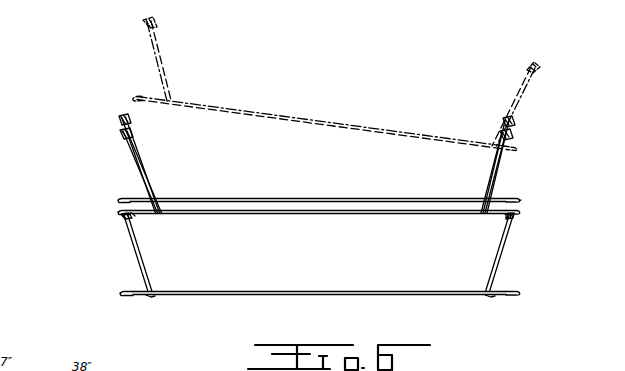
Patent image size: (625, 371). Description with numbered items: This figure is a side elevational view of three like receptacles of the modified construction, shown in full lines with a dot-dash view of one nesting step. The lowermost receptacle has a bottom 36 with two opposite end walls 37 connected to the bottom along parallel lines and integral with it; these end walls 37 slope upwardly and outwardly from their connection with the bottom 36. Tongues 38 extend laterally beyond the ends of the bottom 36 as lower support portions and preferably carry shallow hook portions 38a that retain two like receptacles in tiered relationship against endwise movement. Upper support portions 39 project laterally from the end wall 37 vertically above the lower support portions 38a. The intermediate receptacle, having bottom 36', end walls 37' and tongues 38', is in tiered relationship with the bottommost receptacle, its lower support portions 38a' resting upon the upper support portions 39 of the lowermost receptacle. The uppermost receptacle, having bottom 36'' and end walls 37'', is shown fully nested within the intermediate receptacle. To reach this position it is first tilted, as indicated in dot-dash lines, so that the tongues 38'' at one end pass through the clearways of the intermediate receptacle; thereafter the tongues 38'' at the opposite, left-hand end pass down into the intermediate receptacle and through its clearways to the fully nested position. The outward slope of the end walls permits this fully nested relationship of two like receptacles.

The bottom 36 is at (320, 282).
The bottom of intermediate receptacle 36' is at (319, 225).
The bottom of uppermost receptacle 36'' is at (319, 148).
The end wall 37 is at (318, 253).
The end wall of intermediate receptacle 37' is at (327, 170).
The end wall of uppermost receptacle 37'' is at (339, 115).
The tongue 38 is at (322, 309).
The tongue of intermediate receptacle 38' is at (320, 228).
The tongue of uppermost receptacle 38'' is at (316, 153).
The hook portion 38a is at (116, 306).
The lower support portion of intermediate receptacle 38a' is at (93, 209).
The upper support portion 39 is at (123, 218).